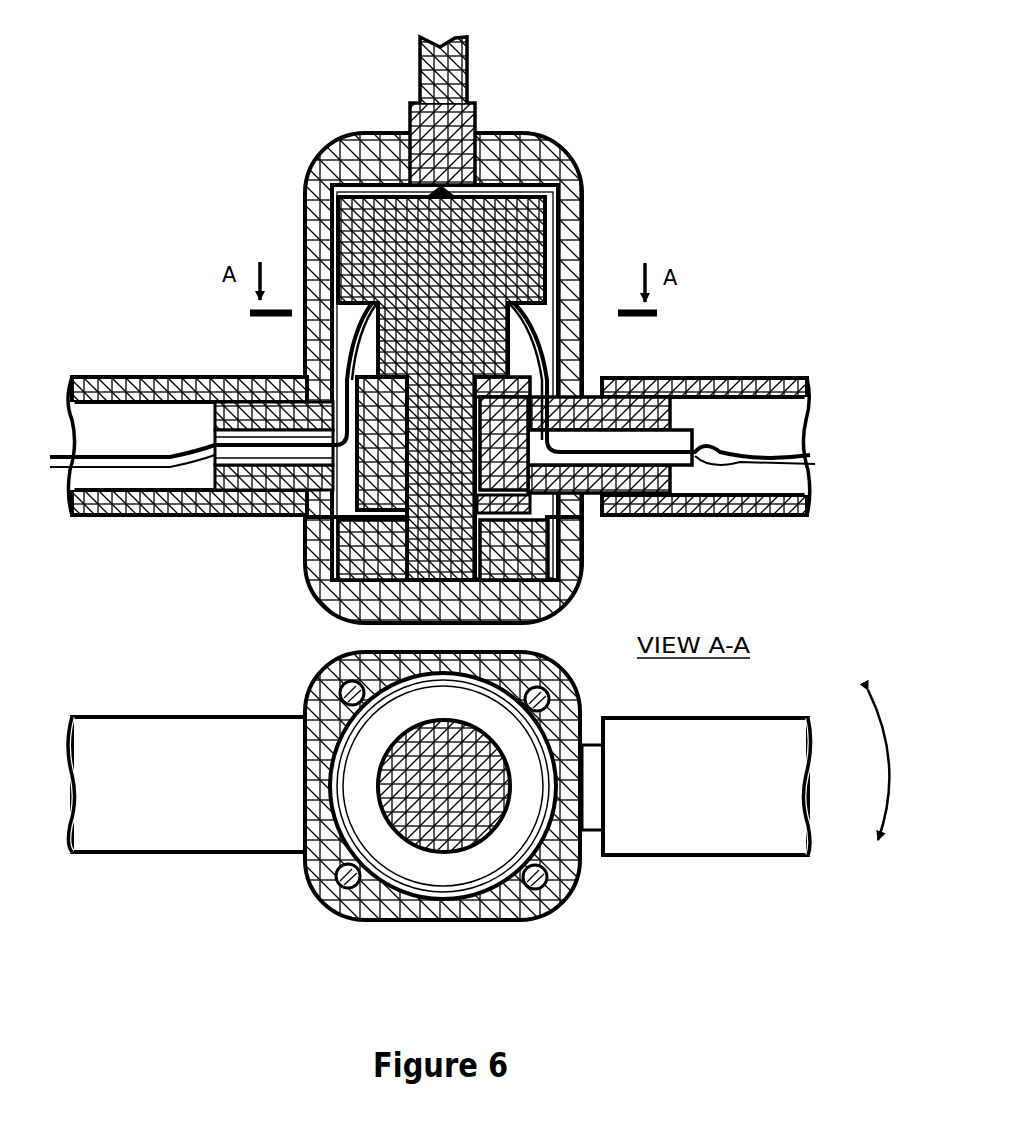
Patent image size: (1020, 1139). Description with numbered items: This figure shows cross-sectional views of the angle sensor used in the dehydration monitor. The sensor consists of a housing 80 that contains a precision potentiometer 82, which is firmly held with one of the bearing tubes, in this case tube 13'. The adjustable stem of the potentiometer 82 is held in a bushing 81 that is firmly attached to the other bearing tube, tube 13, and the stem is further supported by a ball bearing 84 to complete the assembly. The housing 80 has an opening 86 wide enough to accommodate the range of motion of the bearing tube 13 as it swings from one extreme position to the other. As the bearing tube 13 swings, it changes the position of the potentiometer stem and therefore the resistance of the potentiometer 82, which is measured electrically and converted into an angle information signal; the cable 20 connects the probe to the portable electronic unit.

The cable 20 is at (440, 76).
The housing 80 is at (520, 155).
The precision potentiometer 82 is at (500, 262).
The opening 86 is at (594, 367).
The bearing tube 13 is at (702, 628).
The bearing tube 13' is at (200, 572).
The bushing 81 is at (383, 480).
The ball bearing 84 is at (515, 548).